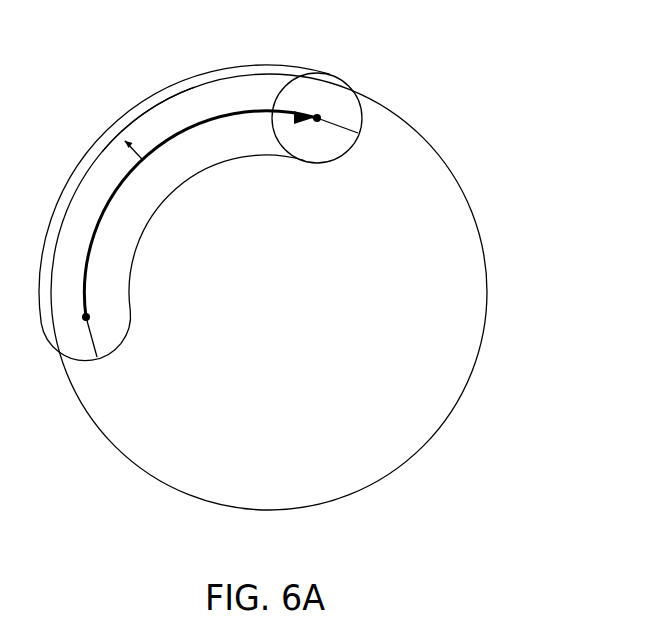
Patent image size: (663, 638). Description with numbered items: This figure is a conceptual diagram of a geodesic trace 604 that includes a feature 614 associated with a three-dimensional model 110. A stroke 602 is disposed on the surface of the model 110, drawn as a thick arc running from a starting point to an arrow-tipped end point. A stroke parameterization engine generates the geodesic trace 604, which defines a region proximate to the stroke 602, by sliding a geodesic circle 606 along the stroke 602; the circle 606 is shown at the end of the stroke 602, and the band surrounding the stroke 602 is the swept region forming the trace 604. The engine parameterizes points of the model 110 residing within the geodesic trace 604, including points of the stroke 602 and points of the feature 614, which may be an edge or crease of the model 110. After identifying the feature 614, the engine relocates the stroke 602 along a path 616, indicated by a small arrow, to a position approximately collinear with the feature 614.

The 3D model 110 is at (472, 220).
The stroke 602 is at (222, 114).
The geodesic trace 604 is at (130, 303).
The geodesic circle 606 is at (340, 73).
The feature 614 is at (140, 122).
The path 616 is at (132, 153).